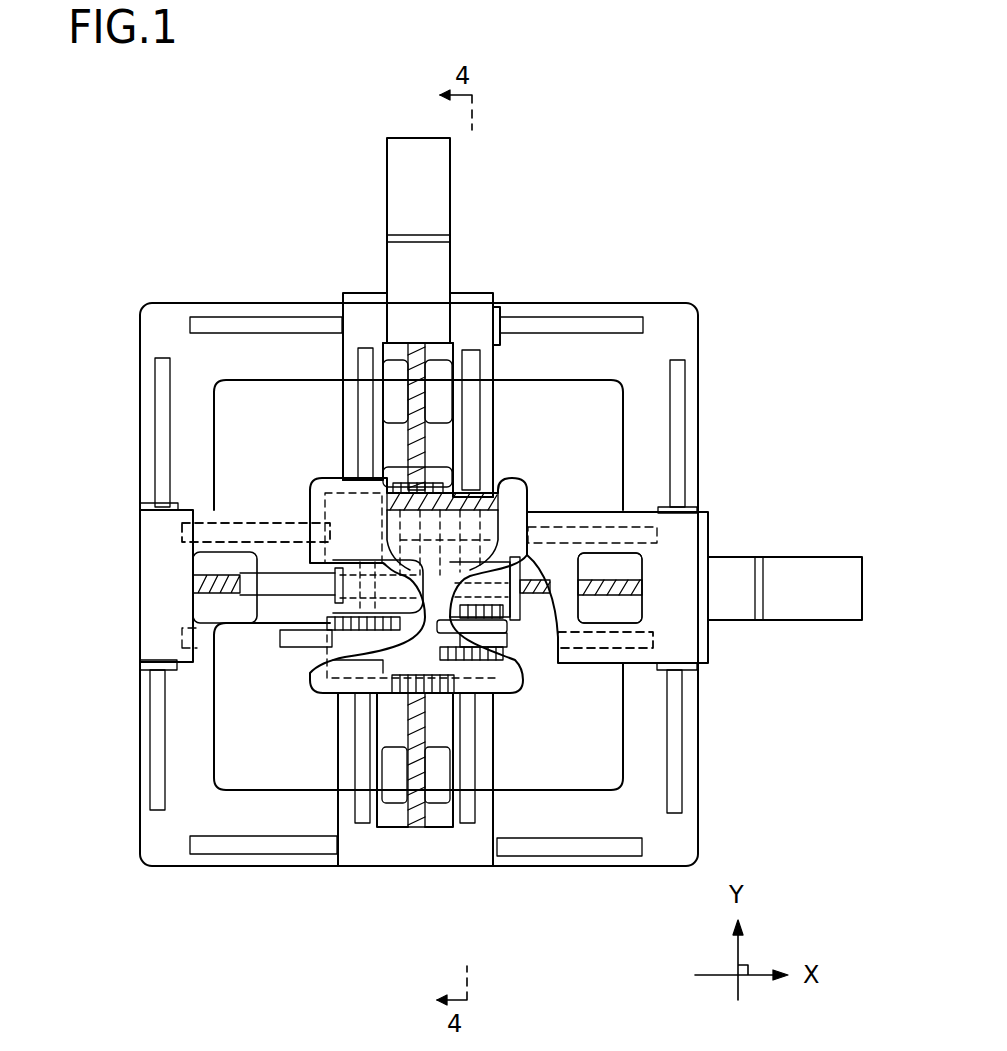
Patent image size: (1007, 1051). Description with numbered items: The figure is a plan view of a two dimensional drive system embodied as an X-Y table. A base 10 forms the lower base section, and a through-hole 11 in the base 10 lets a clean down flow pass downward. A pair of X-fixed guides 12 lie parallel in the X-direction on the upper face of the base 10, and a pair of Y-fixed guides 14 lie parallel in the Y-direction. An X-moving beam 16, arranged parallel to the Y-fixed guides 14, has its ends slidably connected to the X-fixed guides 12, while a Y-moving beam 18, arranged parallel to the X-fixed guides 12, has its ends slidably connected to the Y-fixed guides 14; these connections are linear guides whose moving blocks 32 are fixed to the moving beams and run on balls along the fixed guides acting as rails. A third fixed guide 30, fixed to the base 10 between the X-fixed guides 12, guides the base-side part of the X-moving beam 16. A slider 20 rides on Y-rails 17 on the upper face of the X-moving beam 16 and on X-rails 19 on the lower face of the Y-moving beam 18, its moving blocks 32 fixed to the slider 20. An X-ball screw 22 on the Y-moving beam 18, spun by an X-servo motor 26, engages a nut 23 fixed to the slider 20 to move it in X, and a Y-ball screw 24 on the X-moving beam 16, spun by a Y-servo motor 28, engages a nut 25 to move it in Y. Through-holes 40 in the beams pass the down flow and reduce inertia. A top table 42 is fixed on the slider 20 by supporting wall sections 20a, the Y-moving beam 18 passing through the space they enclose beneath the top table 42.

The base 10 is at (688, 325).
The through-hole 11 is at (250, 762).
The X-fixed guides 12 is at (283, 320).
The Y-fixed guides 14 is at (157, 440).
The X-moving beam 16 is at (472, 455).
The Y-rails 17 is at (360, 432).
The Y-moving beam 18 is at (527, 500).
The X-rails 19 is at (573, 517).
The slider 20 is at (500, 640).
The supporting wall sections 20a is at (478, 497).
The X-ball screw 22 is at (630, 567).
The nut 23 is at (545, 640).
The Y-ball screw 24 is at (425, 400).
The nut 25 is at (505, 485).
The X-servo motor 26 is at (788, 620).
The Y-servo motor 28 is at (392, 177).
The third fixed guide 30 is at (240, 607).
The moving block 32 is at (340, 298).
The through-holes 40 is at (627, 610).
The top table 42 is at (325, 470).